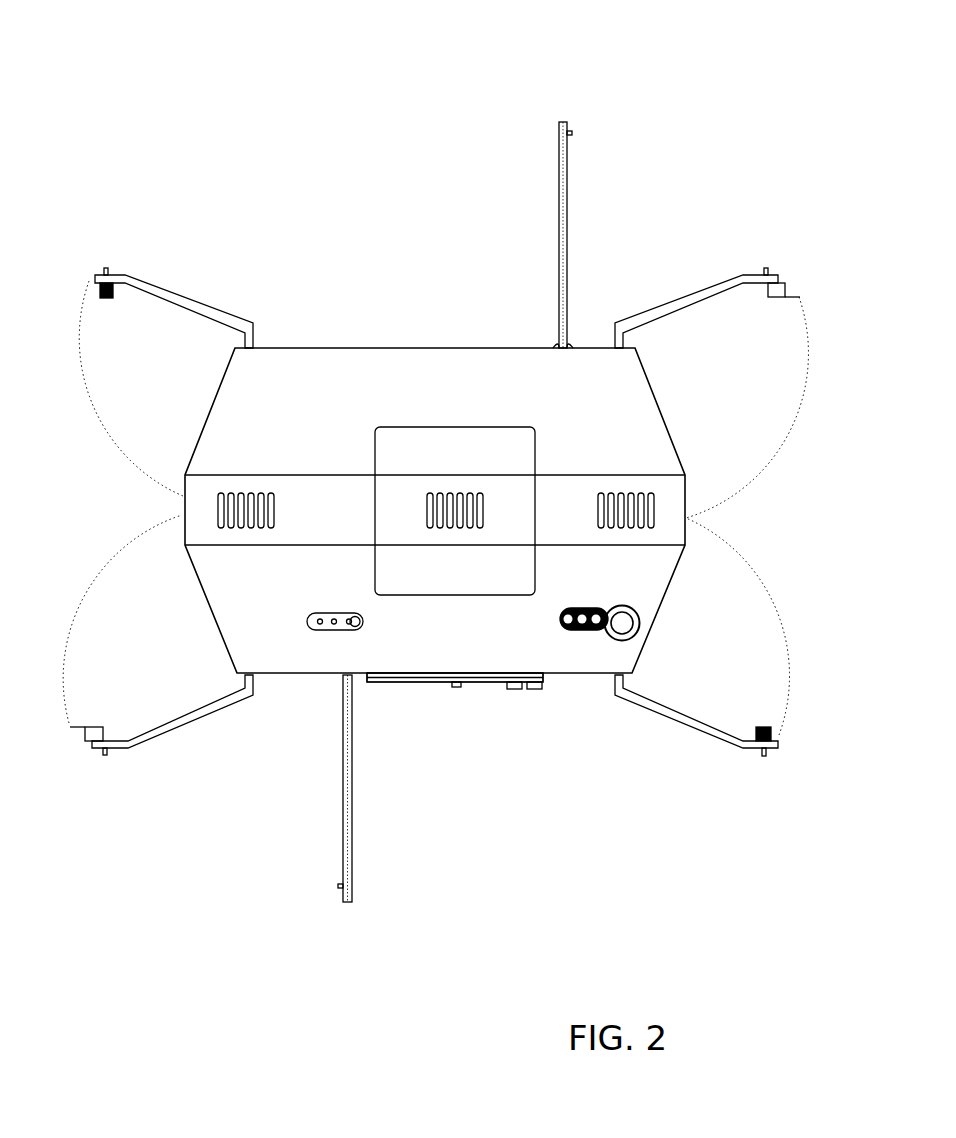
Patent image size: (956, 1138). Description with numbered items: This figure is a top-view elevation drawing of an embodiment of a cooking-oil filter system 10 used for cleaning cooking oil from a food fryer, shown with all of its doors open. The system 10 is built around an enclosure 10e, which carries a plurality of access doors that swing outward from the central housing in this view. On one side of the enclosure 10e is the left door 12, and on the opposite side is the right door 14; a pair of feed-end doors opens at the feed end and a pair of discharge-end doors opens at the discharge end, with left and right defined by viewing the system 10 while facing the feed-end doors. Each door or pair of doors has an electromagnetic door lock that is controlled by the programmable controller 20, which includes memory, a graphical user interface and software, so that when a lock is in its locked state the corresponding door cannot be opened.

The cooking-oil filter system 10 is at (676, 95).
The enclosure 10e is at (313, 434).
The left door 12 is at (348, 852).
The right door 14 is at (565, 212).
The programmable controller 20 is at (493, 683).